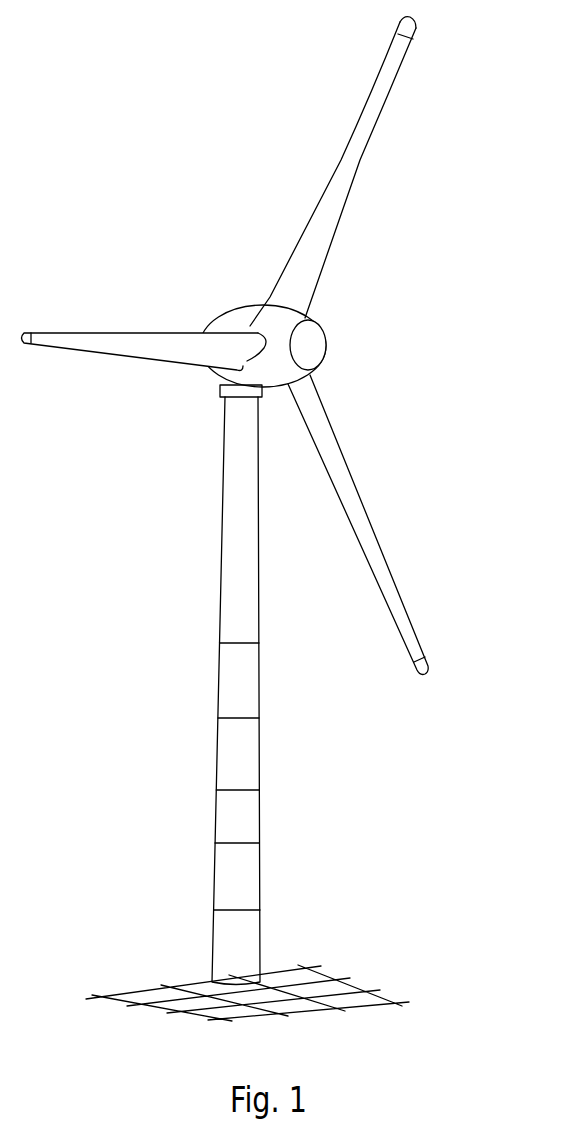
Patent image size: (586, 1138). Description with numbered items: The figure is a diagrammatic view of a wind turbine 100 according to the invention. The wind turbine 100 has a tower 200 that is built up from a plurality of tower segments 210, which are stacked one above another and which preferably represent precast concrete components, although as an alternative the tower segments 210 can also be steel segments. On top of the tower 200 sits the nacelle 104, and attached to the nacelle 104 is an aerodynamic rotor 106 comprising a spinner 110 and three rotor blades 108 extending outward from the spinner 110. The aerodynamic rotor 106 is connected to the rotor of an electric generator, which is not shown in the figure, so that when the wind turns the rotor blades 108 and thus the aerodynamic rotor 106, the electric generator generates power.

The wind turbine 100 is at (185, 455).
The nacelle 104 is at (235, 322).
The aerodynamic rotor 106 is at (383, 280).
The rotor blade 108 is at (365, 133).
The spinner 110 is at (312, 345).
The tower 200 is at (243, 781).
The tower segment 210 is at (222, 685).